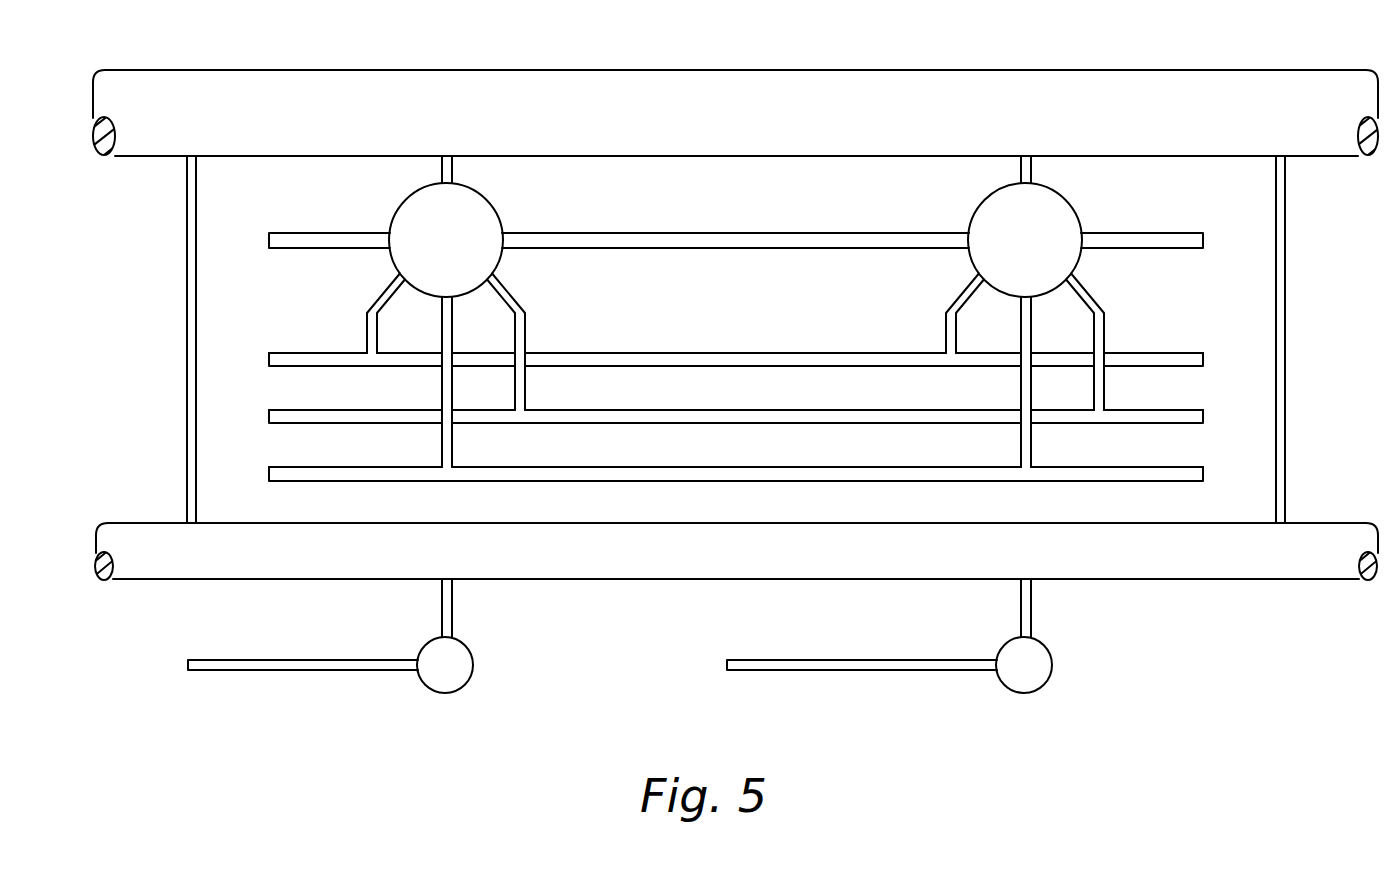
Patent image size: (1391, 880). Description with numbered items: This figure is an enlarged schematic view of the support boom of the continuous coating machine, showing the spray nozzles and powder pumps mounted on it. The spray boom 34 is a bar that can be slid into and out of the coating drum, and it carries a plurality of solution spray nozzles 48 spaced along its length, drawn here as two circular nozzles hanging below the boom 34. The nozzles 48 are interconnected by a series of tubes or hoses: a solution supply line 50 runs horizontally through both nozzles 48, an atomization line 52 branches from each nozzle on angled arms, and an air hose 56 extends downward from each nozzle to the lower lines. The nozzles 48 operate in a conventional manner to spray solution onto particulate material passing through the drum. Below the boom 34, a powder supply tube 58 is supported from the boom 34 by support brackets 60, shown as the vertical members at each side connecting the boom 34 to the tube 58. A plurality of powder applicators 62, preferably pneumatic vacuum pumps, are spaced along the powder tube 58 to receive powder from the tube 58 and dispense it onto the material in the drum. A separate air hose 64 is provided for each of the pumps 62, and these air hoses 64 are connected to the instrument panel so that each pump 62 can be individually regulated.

The spray boom 34 is at (684, 80).
The solution spray nozzle 48 is at (490, 200).
The solution supply line 50 is at (305, 234).
The atomization line 52 is at (389, 298).
The air hose 56 is at (452, 450).
The powder supply tube 58 is at (690, 524).
The support bracket 60 is at (187, 335).
The powder applicator 62 is at (470, 650).
The air hose 64 is at (240, 660).